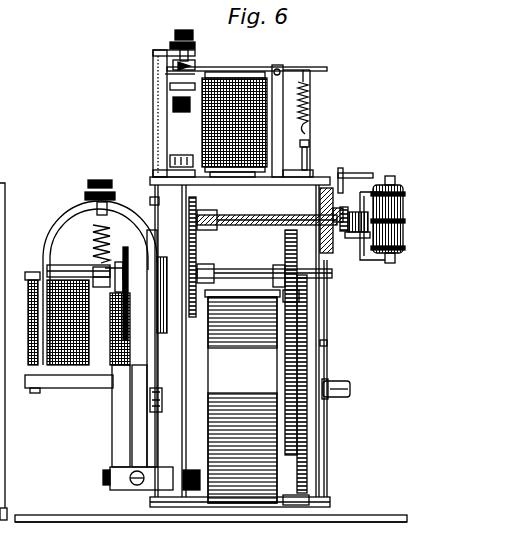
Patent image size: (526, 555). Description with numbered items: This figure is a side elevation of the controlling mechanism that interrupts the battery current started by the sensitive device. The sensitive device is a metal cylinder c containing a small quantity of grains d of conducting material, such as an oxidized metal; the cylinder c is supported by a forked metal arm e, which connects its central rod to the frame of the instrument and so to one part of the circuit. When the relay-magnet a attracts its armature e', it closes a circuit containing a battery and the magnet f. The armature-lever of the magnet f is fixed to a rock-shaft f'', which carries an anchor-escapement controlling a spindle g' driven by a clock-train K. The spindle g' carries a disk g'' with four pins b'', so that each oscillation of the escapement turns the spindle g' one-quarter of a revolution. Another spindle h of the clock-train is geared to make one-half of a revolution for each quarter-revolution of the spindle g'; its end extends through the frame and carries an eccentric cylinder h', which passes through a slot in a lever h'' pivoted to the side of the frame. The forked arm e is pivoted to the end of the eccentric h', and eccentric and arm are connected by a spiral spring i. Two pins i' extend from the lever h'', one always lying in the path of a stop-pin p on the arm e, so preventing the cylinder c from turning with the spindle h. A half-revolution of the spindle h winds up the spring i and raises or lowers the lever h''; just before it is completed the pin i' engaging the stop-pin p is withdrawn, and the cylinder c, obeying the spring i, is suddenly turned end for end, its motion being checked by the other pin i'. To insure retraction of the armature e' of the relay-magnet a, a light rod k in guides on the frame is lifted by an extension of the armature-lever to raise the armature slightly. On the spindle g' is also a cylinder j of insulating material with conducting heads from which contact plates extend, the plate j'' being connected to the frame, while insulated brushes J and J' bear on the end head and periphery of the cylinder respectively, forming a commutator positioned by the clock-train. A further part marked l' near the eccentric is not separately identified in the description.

The relay-magnet a is at (174, 103).
The pins b'' is at (85, 345).
The metal cylinder c is at (400, 240).
The grains of conducting material d is at (400, 215).
The forked metal arm e is at (373, 215).
The armature e' is at (247, 112).
The magnet f is at (112, 329).
The rock-shaft f'' is at (88, 233).
The spindle g' is at (264, 266).
The disk g'' is at (180, 257).
The spindle h is at (267, 213).
The eccentric cylinder h' is at (348, 233).
The lever h'' is at (331, 240).
The spiral spring i is at (356, 210).
The pins i' is at (355, 175).
The cylinder of insulating material j is at (114, 263).
The contact plate j'' is at (79, 347).
The insulated strip or brush J is at (134, 427).
The insulated strip or brush J' is at (139, 416).
The light rod k is at (152, 206).
The clock-train K is at (310, 425).
The lever arm l' is at (357, 256).
The stop-pin p is at (368, 262).